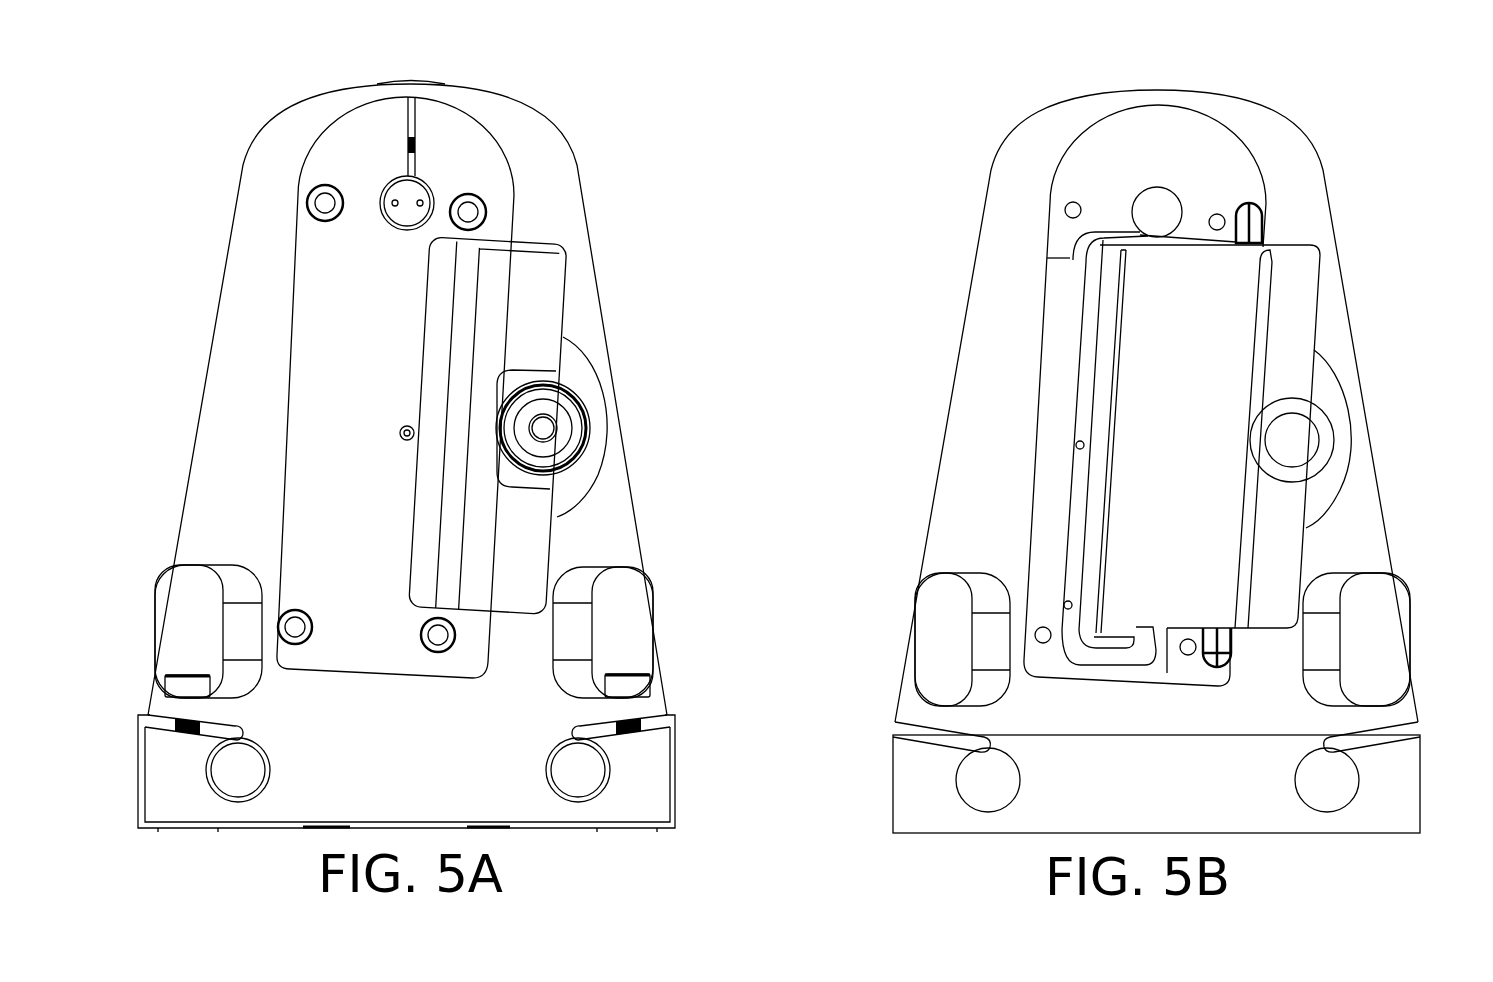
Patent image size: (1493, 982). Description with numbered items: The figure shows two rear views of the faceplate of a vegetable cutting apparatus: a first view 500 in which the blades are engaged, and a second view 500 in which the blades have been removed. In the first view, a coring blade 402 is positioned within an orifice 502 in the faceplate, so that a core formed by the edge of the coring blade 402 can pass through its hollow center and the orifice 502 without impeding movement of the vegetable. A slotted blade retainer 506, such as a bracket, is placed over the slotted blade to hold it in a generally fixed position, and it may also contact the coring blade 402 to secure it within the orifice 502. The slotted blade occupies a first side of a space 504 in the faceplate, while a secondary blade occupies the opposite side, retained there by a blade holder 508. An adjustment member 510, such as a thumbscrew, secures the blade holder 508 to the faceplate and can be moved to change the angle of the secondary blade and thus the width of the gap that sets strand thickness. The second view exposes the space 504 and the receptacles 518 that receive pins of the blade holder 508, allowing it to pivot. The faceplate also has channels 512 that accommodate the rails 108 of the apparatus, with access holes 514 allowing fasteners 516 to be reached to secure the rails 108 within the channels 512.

In FIG. 5A, the view 500 is at (250, 112).
In FIG. 5B, the view 500 is at (1286, 86).
In FIG. 5A, the coring blade 402 is at (432, 192).
In FIG. 5A, the slotted blade retainer 506 is at (337, 265).
In FIG. 5A, the blade holder 508 is at (502, 350).
In FIG. 5A, the adjustment member 510 is at (545, 428).
In FIG. 5A, the access holes 514 is at (612, 628).
In FIG. 5A, the fasteners 516 is at (630, 680).
In FIG. 5A, the rails 108 is at (597, 760).
In FIG. 5B, the channels 512 is at (988, 782).
In FIG. 5B, the receptacles 518 is at (1240, 217).
In FIG. 5B, the orifice 502 is at (1157, 208).
In FIG. 5B, the space 504 is at (1143, 317).